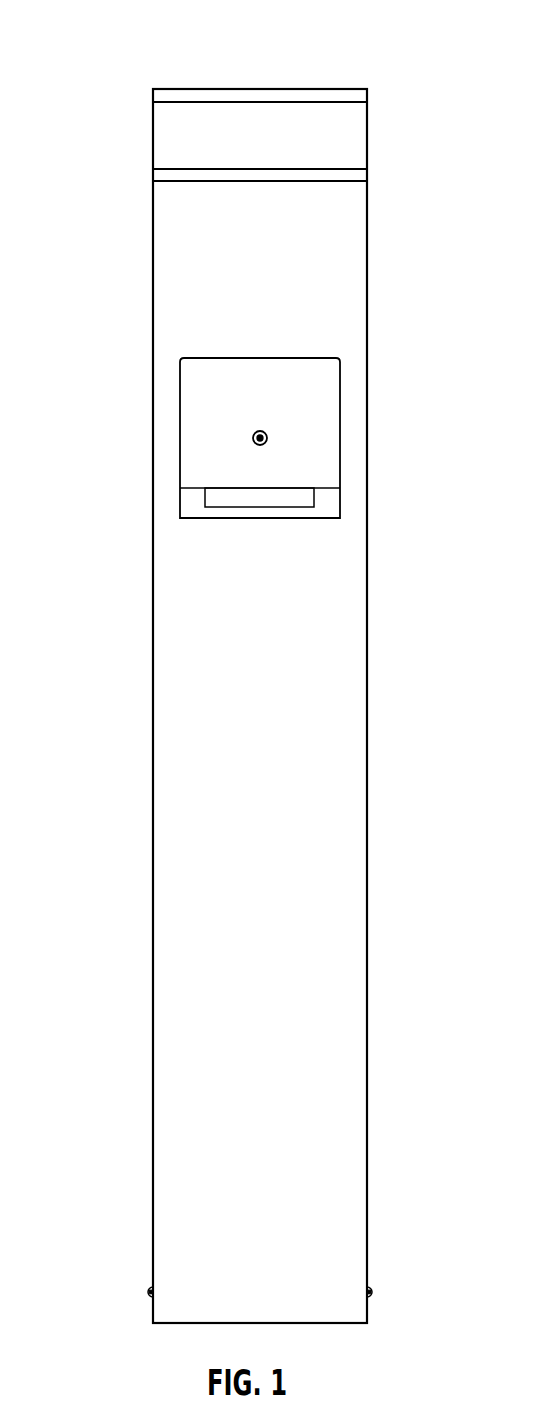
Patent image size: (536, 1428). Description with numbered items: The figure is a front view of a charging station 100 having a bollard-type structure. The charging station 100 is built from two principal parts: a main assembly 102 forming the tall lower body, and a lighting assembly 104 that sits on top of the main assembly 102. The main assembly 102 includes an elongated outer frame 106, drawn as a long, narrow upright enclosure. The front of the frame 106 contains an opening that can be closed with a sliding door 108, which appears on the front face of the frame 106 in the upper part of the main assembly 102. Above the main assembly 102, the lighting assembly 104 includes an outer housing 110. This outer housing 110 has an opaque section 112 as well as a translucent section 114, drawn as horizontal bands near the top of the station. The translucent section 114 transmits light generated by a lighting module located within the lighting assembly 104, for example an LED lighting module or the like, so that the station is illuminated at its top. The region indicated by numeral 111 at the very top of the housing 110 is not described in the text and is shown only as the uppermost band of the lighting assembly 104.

The charging station 100 is at (131, 54).
The main assembly 102 is at (138, 182).
The lighting assembly 104 is at (137, 88).
The outer frame 106 is at (355, 755).
The sliding door 108 is at (340, 440).
The outer housing 110 is at (367, 112).
The top strip 111 is at (303, 93).
The opaque section 112 is at (356, 130).
The translucent section 114 is at (362, 175).